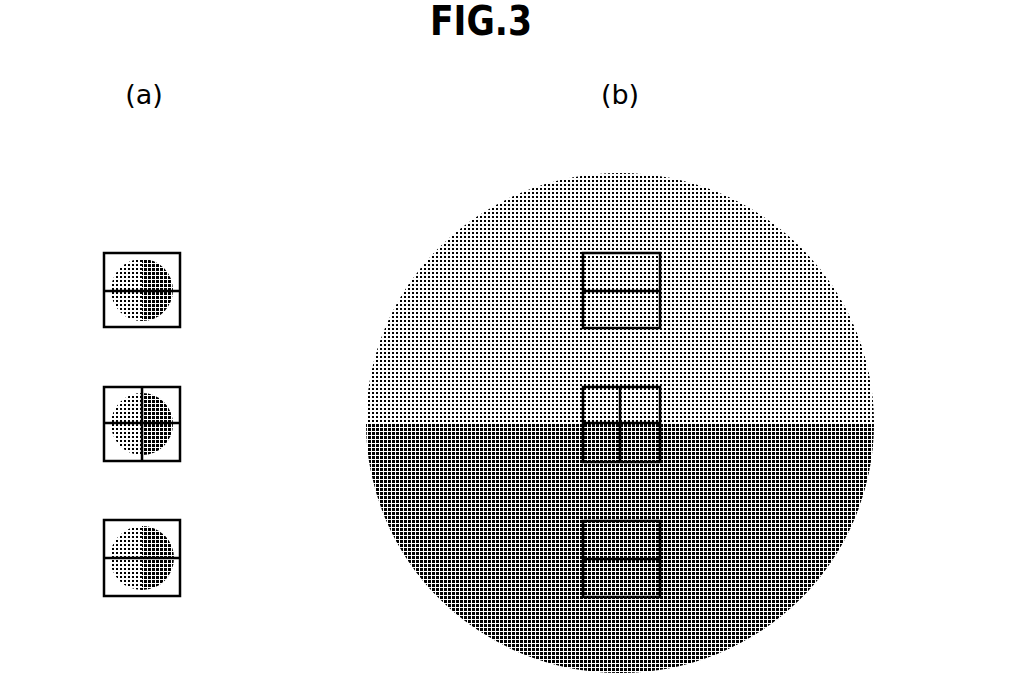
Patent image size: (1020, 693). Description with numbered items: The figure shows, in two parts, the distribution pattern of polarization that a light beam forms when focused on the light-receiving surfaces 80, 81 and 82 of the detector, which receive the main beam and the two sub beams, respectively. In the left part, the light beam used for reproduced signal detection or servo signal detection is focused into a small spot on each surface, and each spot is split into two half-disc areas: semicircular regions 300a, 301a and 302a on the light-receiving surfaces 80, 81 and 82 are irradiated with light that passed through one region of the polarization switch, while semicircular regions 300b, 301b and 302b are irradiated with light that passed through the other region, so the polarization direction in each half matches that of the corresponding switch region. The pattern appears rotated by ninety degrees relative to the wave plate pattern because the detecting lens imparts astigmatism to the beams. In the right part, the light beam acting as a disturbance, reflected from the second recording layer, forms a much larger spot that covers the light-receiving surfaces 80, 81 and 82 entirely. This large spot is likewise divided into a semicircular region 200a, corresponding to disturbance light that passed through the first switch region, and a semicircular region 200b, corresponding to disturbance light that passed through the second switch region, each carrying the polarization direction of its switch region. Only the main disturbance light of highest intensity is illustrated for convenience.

The light-receiving surface 80 is at (126, 387).
The light-receiving surface 81 is at (126, 253).
The light-receiving surface 82 is at (126, 520).
The semicircular region 200a is at (445, 583).
The semicircular region 200b is at (645, 200).
The semicircular region 300a is at (163, 412).
The semicircular region 300b is at (122, 412).
The semicircular region 301a is at (163, 278).
The semicircular region 301b is at (122, 278).
The semicircular region 302a is at (163, 546).
The semicircular region 302b is at (122, 546).